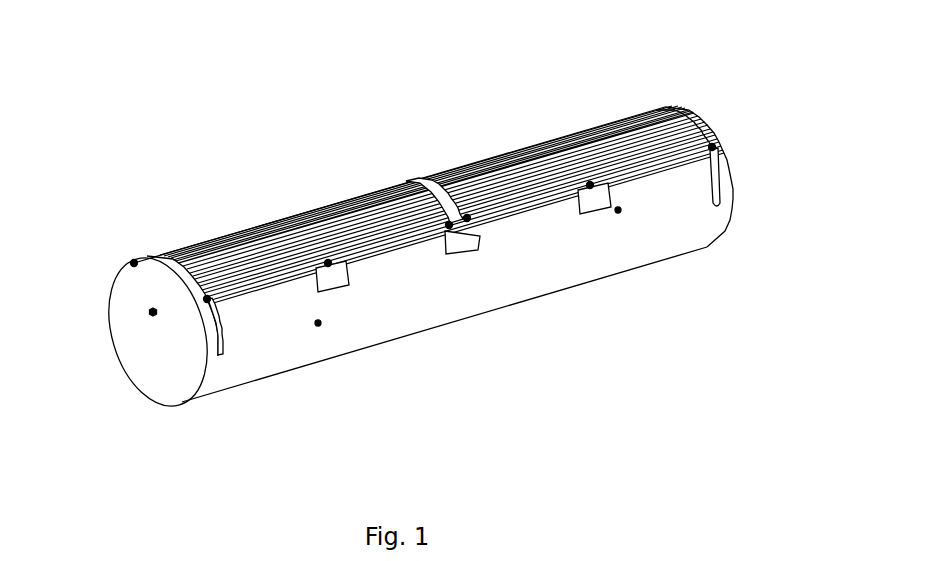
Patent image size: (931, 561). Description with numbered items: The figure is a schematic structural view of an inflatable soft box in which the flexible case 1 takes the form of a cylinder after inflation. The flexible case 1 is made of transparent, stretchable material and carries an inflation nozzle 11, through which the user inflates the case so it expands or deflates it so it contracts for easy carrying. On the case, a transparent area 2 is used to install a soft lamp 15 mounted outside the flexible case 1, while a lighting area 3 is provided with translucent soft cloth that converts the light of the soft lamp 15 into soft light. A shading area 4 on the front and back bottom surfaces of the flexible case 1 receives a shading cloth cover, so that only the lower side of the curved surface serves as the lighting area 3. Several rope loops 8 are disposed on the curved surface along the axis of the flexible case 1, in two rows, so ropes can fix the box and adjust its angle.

The flexible case 1 is at (716, 148).
The transparent area 2 is at (421, 183).
The lighting area 3 is at (500, 308).
The shading area 4 is at (150, 400).
The rope loops 8 is at (320, 323).
The inflation nozzle 11 is at (151, 312).
The soft lamp 15 is at (547, 140).